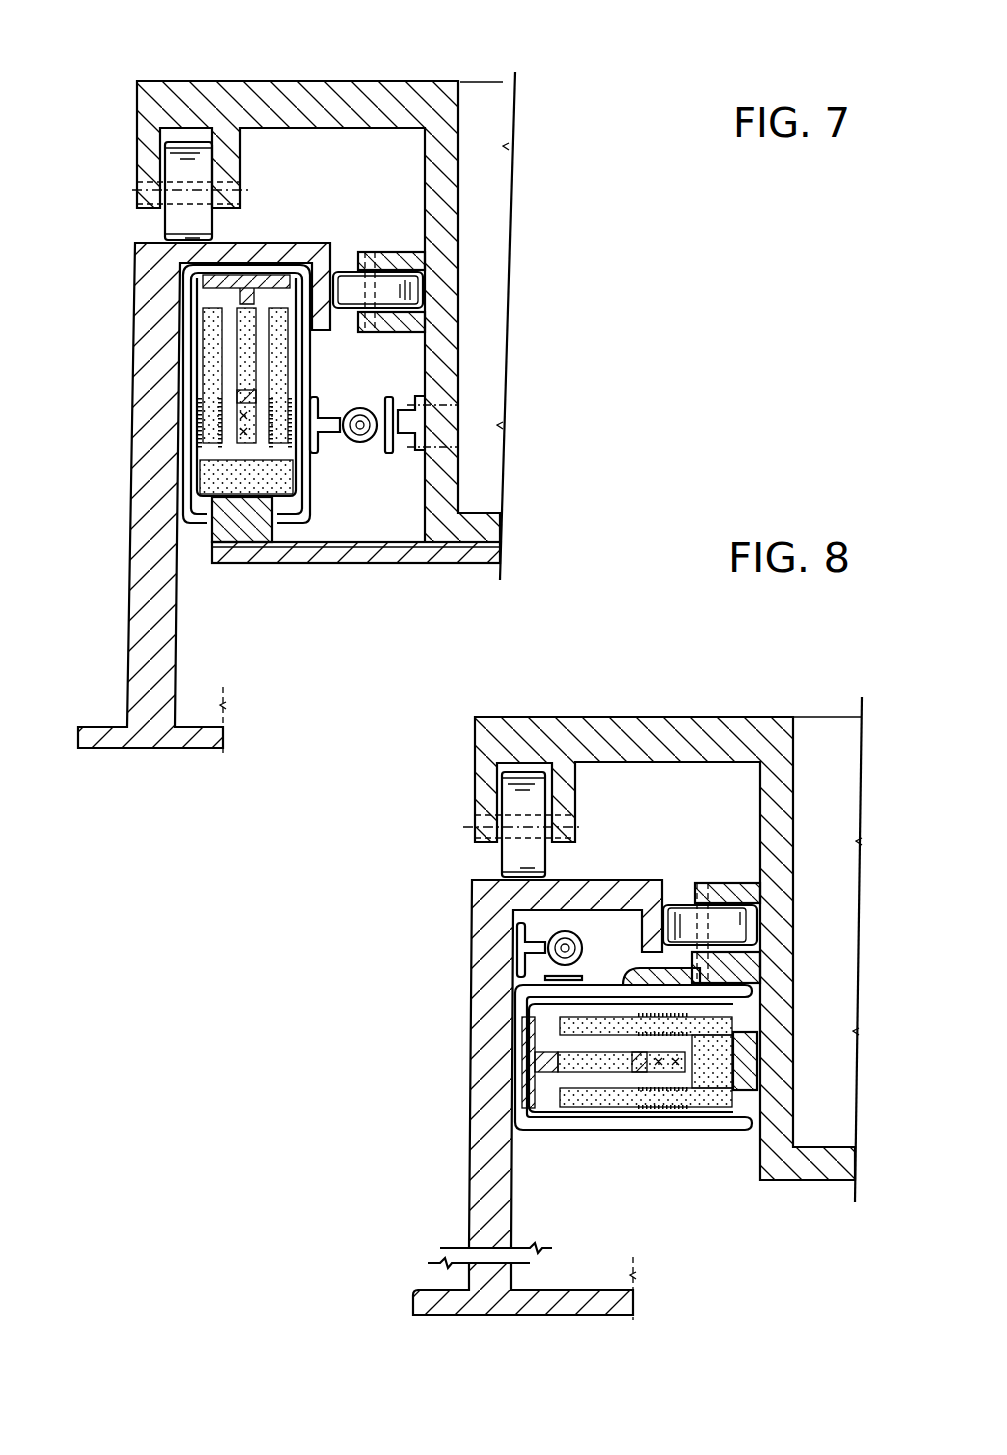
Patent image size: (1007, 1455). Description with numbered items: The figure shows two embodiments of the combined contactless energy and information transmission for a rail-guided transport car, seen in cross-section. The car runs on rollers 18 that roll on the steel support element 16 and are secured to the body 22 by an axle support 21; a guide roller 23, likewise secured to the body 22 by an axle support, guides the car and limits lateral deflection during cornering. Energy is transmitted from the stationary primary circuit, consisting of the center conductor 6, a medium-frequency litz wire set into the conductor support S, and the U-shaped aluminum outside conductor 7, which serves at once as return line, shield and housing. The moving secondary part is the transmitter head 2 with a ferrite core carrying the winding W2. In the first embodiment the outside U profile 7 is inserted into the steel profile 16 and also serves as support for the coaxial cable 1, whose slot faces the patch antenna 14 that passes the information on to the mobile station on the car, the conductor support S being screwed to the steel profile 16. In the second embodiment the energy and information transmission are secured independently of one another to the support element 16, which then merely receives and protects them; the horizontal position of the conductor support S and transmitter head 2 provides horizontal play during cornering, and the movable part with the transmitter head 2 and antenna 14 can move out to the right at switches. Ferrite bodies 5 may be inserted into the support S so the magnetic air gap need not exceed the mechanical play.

In FIG. 7, the coaxial cable 1 is at (362, 450).
In FIG. 8, the coaxial cable 1 is at (550, 928).
In FIG. 7, the transmitter head 2 is at (278, 373).
In FIG. 8, the transmitter head 2 is at (705, 1110).
In FIG. 8, the ferrite bodies 5 is at (573, 1063).
In FIG. 7, the center conductor 6 is at (272, 565).
In FIG. 7, the outside conductor 7 is at (312, 353).
In FIG. 8, the outside conductor 7 is at (577, 1123).
In FIG. 7, the patch antenna 14 is at (390, 455).
In FIG. 8, the patch antenna 14 is at (540, 979).
In FIG. 7, the support element 16 is at (157, 641).
In FIG. 8, the support element 16 is at (468, 1210).
In FIG. 7, the rollers 18 is at (188, 142).
In FIG. 8, the rollers 18 is at (518, 760).
In FIG. 7, the axle support 21 is at (323, 110).
In FIG. 8, the axle support 21 is at (635, 730).
In FIG. 7, the body 22 is at (450, 145).
In FIG. 8, the body 22 is at (787, 813).
In FIG. 7, the guide roller 23 is at (400, 287).
In FIG. 8, the guide roller 23 is at (685, 900).
In FIG. 7, the conductor support S is at (250, 297).
In FIG. 7, the winding W2 is at (208, 438).
In FIG. 8, the winding W2 is at (657, 1105).